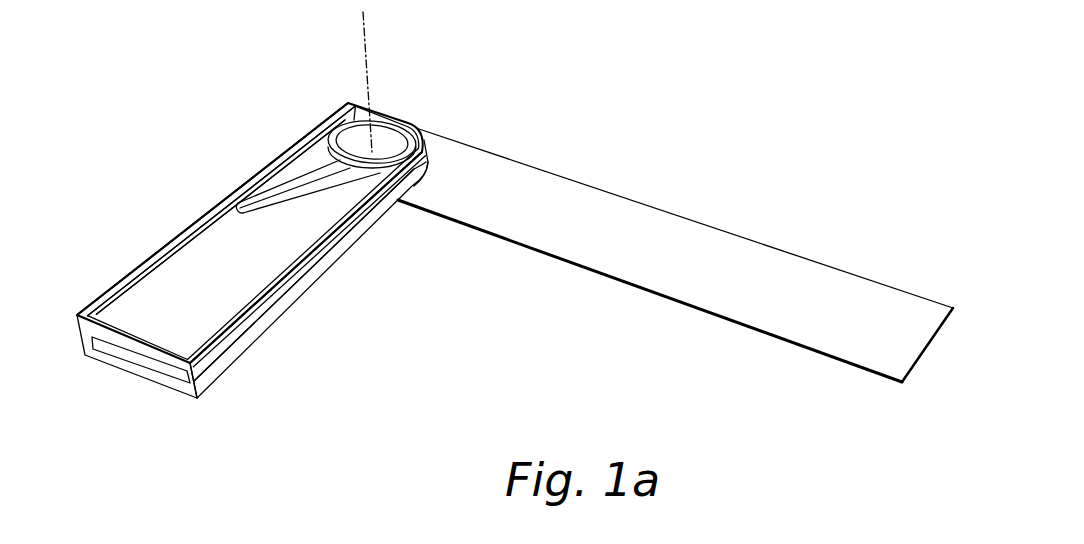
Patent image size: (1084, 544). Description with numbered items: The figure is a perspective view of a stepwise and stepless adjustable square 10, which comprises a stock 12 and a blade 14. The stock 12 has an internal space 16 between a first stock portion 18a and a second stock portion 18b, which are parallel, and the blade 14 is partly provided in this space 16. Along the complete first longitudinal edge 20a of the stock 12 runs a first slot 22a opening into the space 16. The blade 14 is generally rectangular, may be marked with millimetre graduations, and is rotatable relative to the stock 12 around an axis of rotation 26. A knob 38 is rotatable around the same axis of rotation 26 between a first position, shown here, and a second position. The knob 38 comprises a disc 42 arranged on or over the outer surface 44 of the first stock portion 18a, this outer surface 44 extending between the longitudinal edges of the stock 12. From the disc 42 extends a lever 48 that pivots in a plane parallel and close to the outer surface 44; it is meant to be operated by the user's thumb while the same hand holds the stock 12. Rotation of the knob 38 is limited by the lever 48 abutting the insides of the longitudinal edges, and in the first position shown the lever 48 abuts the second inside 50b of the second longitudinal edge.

The adjustable square 10 is at (603, 92).
The stock 12 is at (145, 400).
The blade 14 is at (700, 289).
The space 16 is at (103, 344).
The first stock portion 18a is at (201, 374).
The second stock portion 18b is at (184, 394).
The first longitudinal edge 20a is at (270, 330).
The first slot 22a is at (345, 245).
The axis of rotation 26 is at (371, 80).
The knob 38 is at (347, 185).
The disc 42 is at (350, 134).
The outer surface 44 is at (192, 326).
The lever 48 is at (241, 214).
The second inside 50b is at (165, 263).